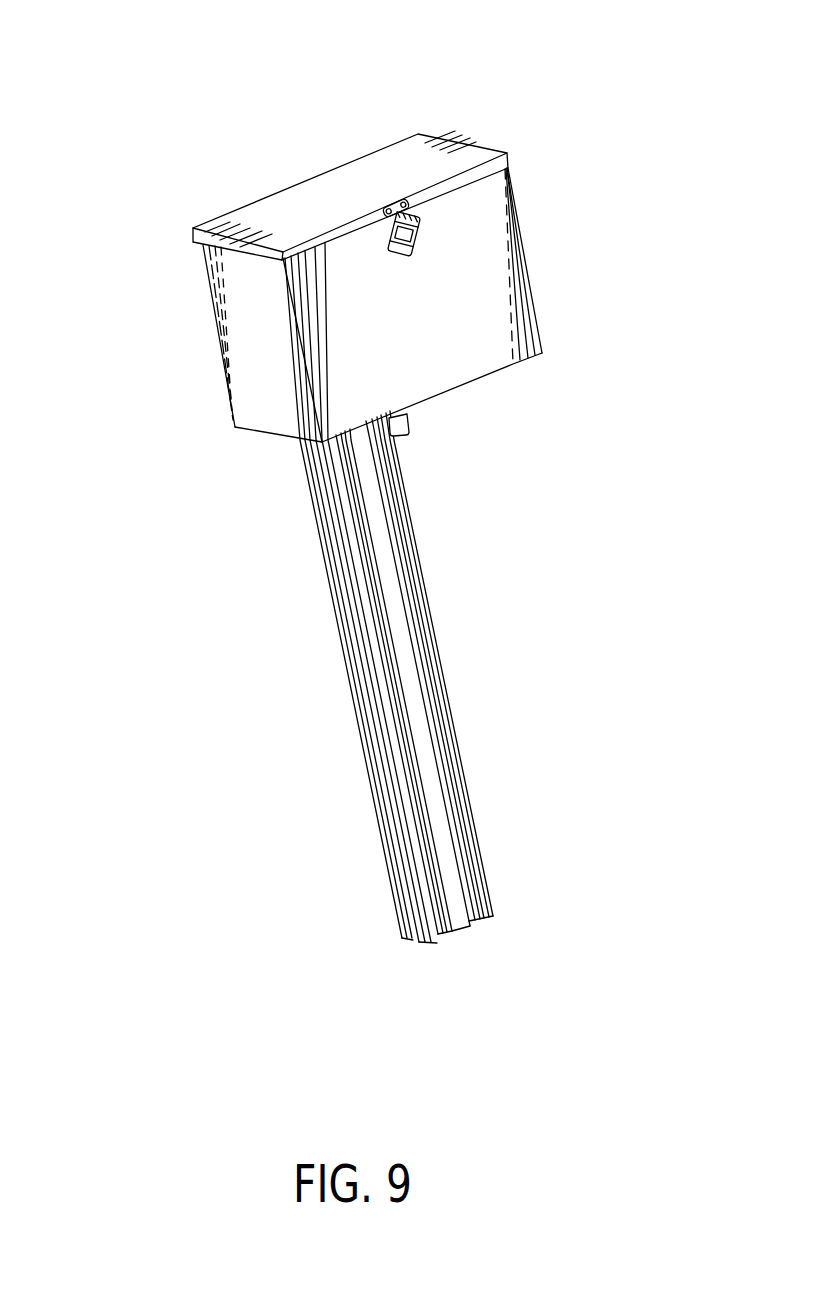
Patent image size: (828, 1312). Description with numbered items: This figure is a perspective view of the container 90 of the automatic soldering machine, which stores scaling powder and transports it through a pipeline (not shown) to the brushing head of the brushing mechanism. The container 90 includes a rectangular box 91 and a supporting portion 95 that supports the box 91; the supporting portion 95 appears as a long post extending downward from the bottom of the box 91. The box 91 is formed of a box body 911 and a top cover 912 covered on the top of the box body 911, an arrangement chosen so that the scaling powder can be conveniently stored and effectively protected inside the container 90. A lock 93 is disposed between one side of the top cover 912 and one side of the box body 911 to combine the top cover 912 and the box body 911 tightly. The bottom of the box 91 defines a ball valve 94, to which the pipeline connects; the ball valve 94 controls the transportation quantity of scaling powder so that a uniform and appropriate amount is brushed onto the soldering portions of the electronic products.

The container 90 is at (90, 71).
The rectangular box 91 is at (255, 350).
The box body 911 is at (492, 325).
The top cover 912 is at (385, 177).
The lock 93 is at (405, 235).
The ball valve 94 is at (413, 428).
The supporting portion 95 is at (348, 650).